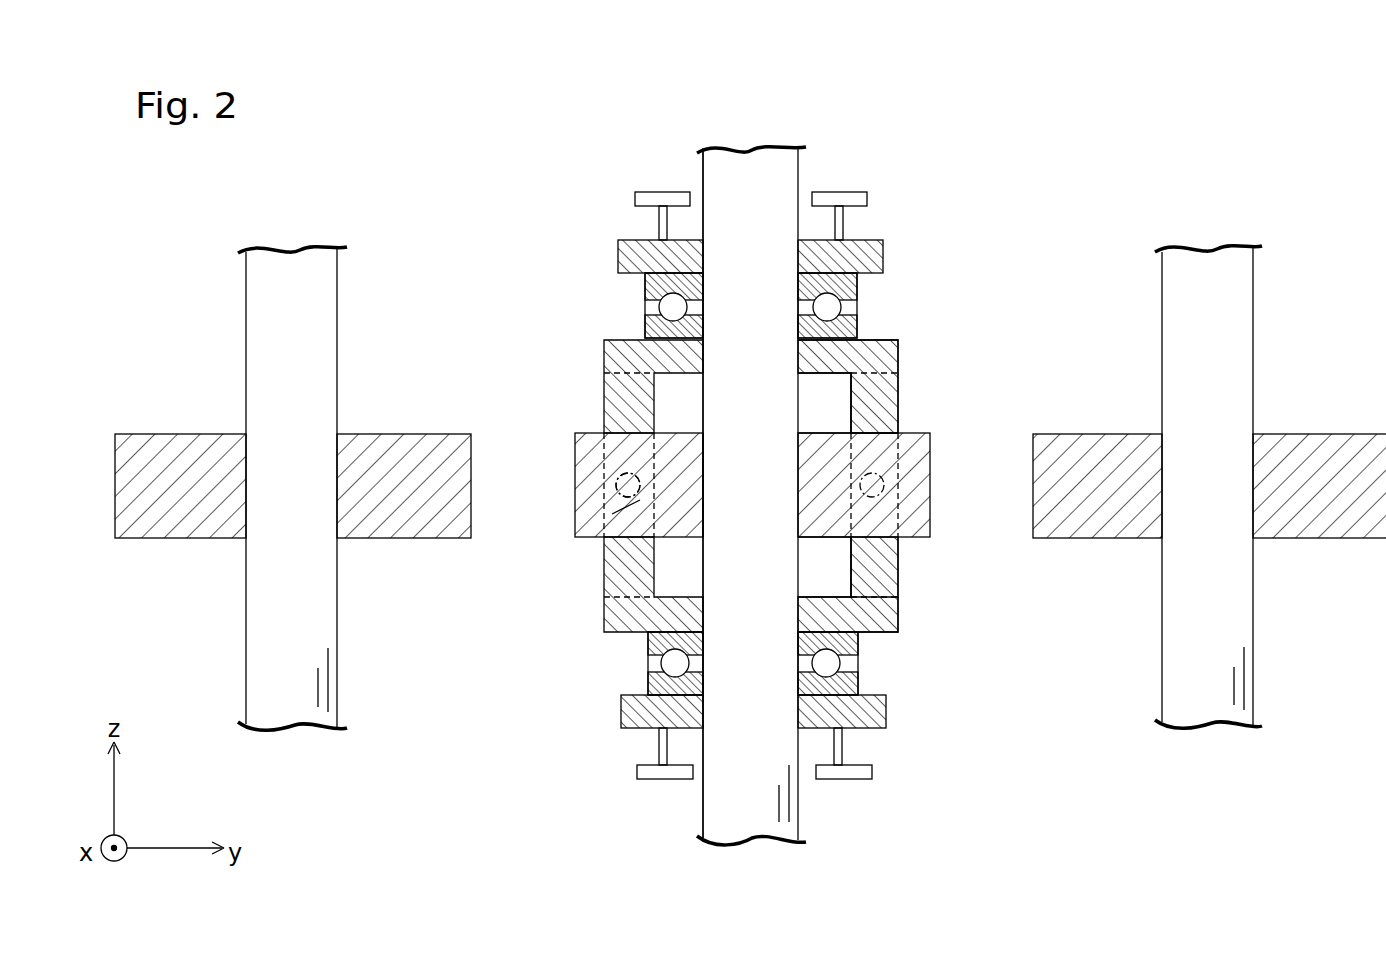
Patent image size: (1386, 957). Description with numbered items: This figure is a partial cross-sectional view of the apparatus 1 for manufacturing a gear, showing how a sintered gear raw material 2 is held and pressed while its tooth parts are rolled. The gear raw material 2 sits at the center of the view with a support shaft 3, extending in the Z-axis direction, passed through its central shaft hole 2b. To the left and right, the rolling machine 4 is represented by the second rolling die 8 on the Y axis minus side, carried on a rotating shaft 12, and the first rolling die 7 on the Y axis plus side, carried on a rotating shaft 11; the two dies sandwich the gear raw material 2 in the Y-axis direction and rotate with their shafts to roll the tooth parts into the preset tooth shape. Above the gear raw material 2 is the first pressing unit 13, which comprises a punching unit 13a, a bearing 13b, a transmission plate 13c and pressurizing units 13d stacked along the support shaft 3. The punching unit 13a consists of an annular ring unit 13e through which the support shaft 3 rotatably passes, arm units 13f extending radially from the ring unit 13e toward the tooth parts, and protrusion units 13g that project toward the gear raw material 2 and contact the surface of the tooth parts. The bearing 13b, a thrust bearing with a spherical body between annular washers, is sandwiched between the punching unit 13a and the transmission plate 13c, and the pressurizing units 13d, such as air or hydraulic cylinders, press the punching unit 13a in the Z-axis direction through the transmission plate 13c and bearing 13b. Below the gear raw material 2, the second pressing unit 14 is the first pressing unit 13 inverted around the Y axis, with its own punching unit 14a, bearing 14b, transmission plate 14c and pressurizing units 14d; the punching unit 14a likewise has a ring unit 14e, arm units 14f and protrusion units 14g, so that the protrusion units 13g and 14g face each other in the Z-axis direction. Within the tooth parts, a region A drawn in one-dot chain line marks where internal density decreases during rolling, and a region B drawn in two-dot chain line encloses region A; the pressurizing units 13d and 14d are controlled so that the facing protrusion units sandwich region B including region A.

The apparatus for manufacturing a gear 1 is at (1048, 86).
The gear raw material 2 is at (942, 478).
The shaft hole 2b is at (705, 450).
The support shaft 3 is at (715, 815).
The rolling machine 4 is at (750, 459).
The first rolling die 7 is at (1340, 440).
The second rolling die 8 is at (135, 440).
The rotating shaft 11 is at (1242, 328).
The rotating shaft 12 is at (248, 336).
The first pressing unit 13 is at (887, 302).
The punching unit 13a is at (570, 366).
The bearing 13b is at (645, 293).
The transmission plate 13c is at (618, 258).
The pressurizing unit 13d is at (638, 199).
The ring unit 13e is at (806, 374).
The arm unit 13f is at (893, 360).
The protrusion unit 13g is at (886, 398).
The second pressing unit 14 is at (890, 673).
The punching unit 14a is at (586, 580).
The bearing 14b is at (647, 658).
The transmission plate 14c is at (621, 712).
The pressurizing unit 14d is at (637, 771).
The ring unit 14e is at (808, 596).
The arm unit 14f is at (893, 602).
The protrusion unit 14g is at (896, 563).
The region A is at (618, 490).
The region B is at (612, 514).